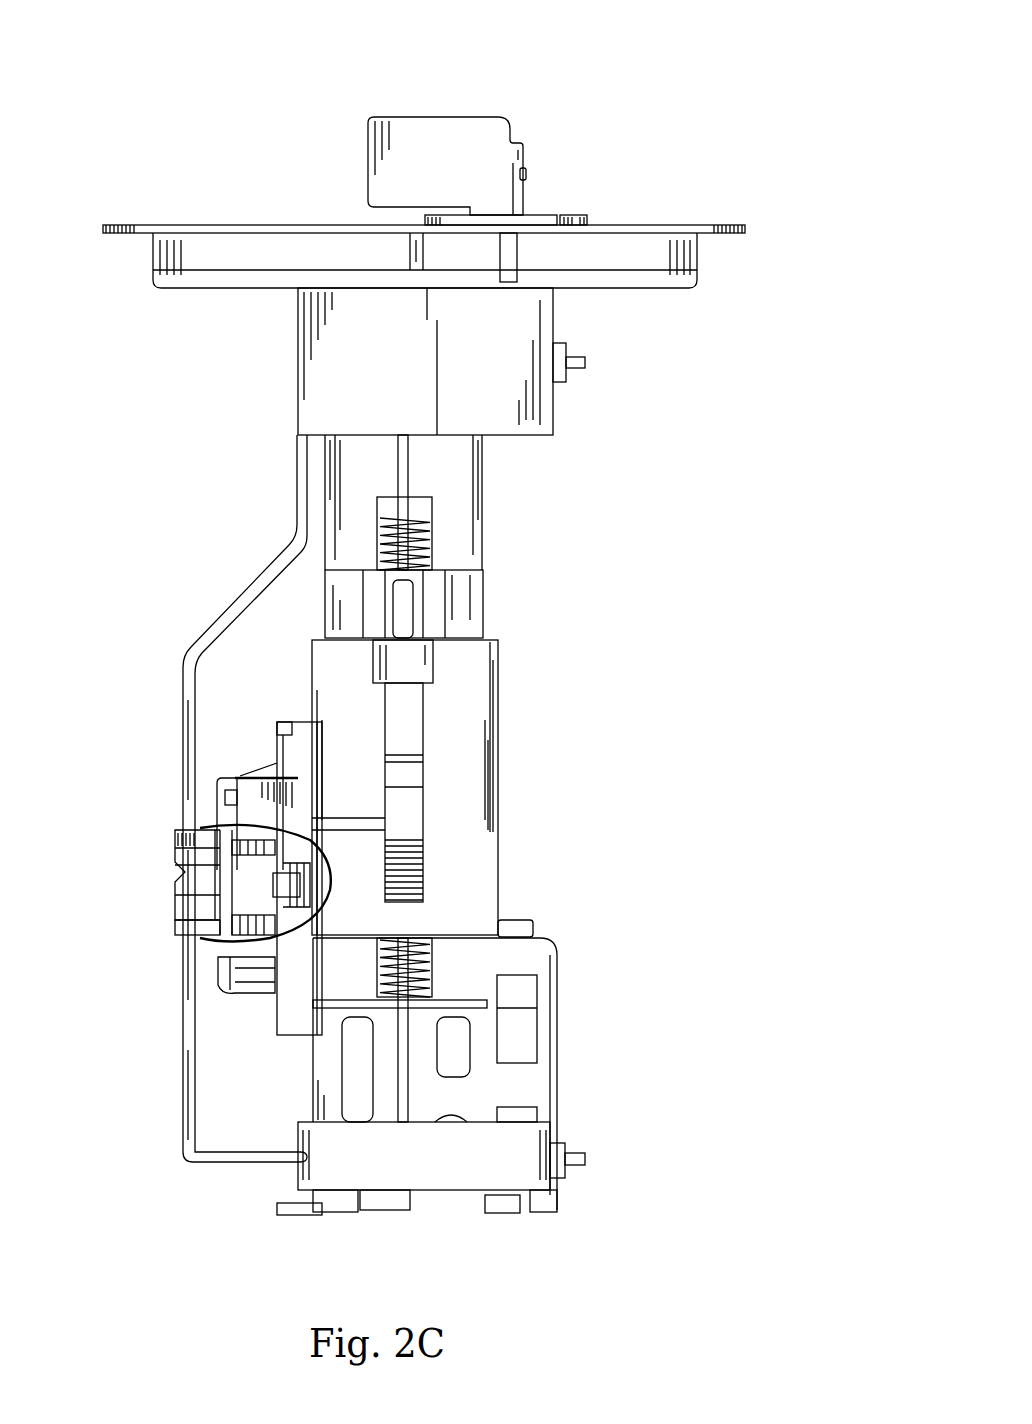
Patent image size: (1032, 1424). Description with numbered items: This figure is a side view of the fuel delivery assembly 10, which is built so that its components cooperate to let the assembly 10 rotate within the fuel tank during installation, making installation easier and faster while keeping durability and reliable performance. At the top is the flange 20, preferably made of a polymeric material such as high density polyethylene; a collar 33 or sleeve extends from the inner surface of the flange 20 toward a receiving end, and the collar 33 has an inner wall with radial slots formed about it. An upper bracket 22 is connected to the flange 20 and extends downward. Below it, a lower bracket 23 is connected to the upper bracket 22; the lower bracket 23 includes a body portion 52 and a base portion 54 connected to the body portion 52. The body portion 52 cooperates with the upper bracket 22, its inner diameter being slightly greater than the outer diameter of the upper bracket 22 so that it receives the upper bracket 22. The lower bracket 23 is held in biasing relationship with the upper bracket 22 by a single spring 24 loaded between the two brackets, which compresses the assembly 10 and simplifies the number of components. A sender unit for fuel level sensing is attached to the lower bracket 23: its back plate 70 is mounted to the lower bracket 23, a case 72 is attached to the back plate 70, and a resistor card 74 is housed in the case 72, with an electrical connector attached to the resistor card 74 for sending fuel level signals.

The assembly 10 is at (640, 90).
The flange 20 is at (222, 243).
The upper bracket 22 is at (353, 508).
The lower bracket 23 is at (342, 710).
The spring 24 is at (375, 965).
The collar 33 is at (382, 374).
The body portion 52 is at (477, 842).
The base portion 54 is at (555, 1010).
The back plate 70 is at (200, 828).
The case 72 is at (262, 778).
The resistor card 74 is at (200, 938).